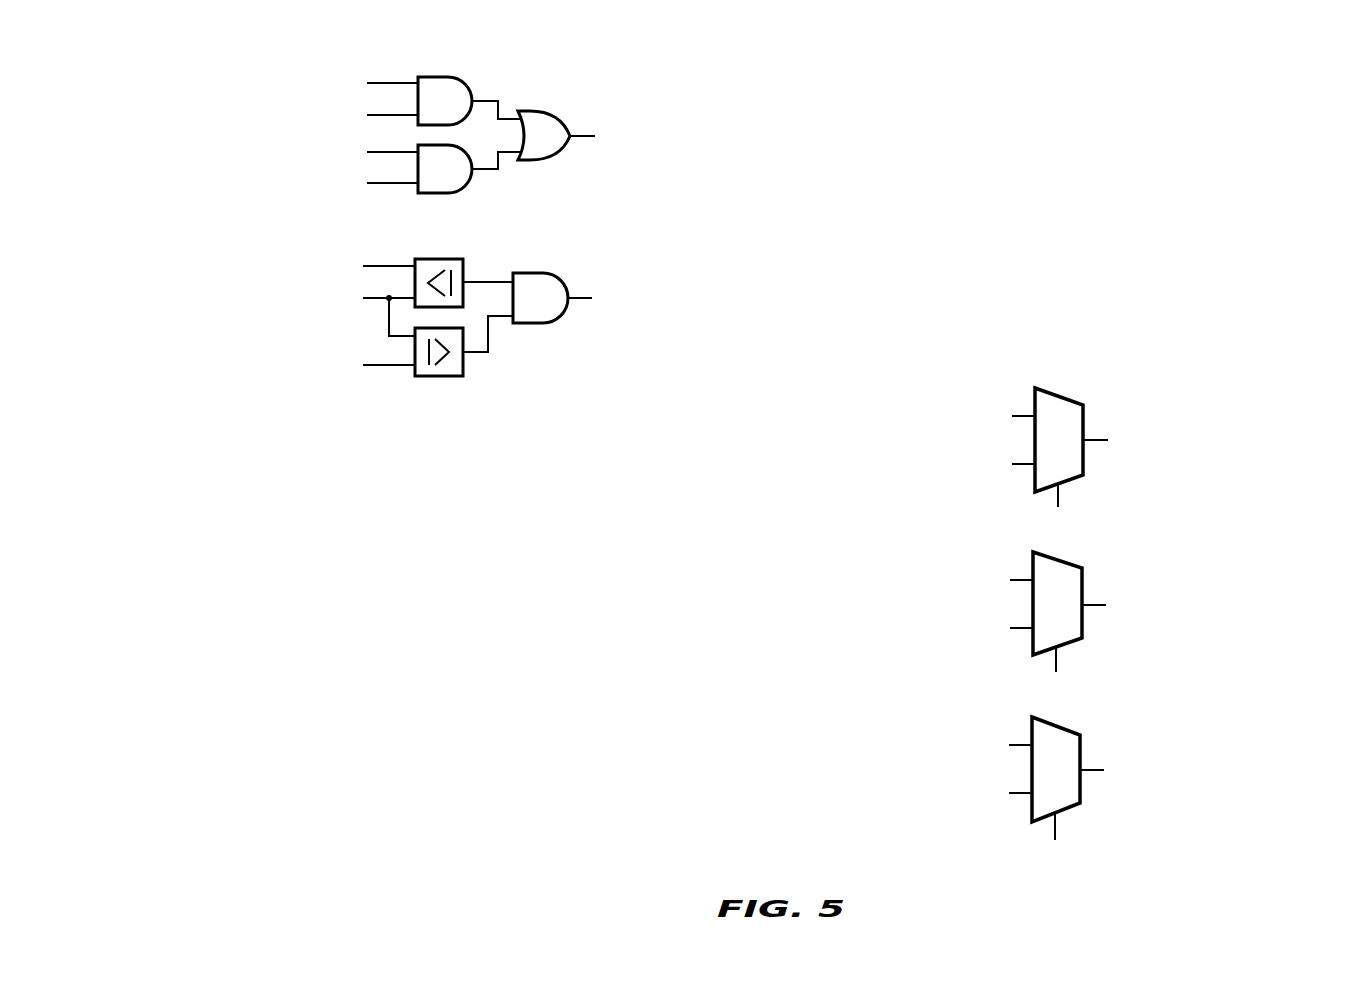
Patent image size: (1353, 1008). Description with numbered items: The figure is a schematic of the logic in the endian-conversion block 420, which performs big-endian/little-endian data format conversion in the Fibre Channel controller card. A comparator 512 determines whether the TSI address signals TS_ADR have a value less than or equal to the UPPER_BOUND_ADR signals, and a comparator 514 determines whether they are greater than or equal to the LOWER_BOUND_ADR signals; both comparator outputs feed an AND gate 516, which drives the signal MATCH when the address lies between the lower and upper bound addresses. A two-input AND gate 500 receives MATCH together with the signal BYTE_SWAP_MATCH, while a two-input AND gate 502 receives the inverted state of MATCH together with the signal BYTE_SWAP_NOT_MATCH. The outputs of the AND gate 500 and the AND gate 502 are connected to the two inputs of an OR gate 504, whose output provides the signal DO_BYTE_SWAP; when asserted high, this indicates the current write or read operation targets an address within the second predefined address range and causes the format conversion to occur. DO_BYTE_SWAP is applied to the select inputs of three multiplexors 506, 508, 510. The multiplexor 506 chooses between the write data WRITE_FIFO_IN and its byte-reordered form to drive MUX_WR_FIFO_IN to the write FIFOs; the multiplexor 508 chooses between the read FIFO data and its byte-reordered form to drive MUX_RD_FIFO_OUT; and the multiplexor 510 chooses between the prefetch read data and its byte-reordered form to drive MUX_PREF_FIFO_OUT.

The endian-conversion block 420 is at (1207, 146).
The AND gate 500 is at (450, 76).
The AND gate 502 is at (450, 194).
The OR gate 504 is at (535, 112).
The multiplexor 506 is at (1063, 398).
The multiplexor 508 is at (1085, 625).
The multiplexor 510 is at (1083, 792).
The comparator 512 is at (455, 260).
The comparator 514 is at (455, 377).
The AND gate 516 is at (545, 275).